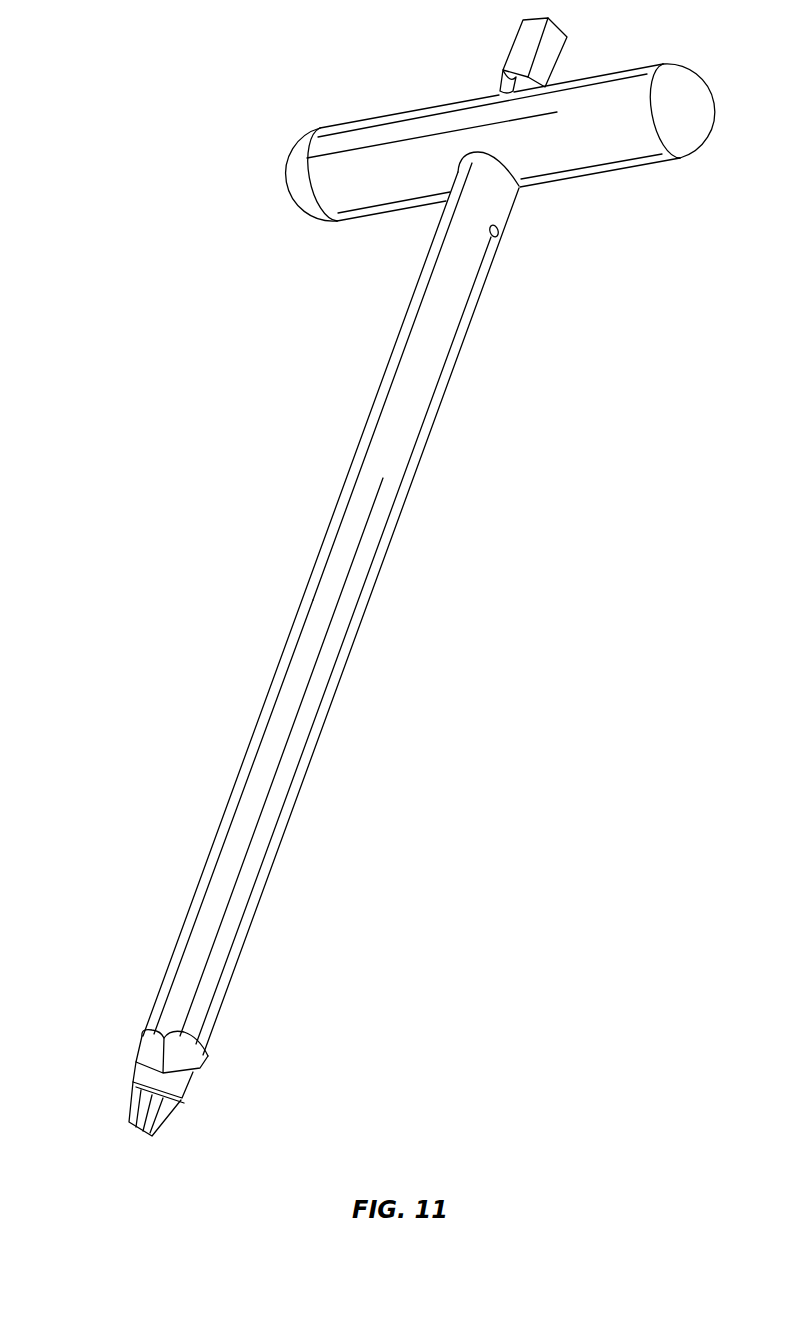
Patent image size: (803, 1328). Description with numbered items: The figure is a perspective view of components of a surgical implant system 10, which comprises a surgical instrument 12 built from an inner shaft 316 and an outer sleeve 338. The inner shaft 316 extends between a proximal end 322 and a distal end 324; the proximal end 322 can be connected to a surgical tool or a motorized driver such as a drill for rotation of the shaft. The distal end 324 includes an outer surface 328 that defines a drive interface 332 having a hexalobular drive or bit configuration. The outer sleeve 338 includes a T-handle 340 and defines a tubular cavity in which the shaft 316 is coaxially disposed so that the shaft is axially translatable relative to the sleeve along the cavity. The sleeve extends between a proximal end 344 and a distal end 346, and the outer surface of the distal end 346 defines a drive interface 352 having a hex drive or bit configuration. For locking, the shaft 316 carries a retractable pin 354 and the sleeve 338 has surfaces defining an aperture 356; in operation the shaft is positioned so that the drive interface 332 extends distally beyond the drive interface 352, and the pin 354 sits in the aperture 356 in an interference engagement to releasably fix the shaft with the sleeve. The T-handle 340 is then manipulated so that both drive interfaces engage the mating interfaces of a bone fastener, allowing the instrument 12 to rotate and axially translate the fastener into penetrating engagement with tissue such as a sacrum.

The surgical implant system 10 is at (641, 552).
The surgical instrument 12 is at (237, 499).
The inner shaft 316 is at (500, 84).
The proximal end 322 is at (562, 37).
The distal end 324 is at (153, 1095).
The outer surface 328 is at (173, 1117).
The drive interface 332 is at (145, 1125).
The outer sleeve 338 is at (340, 613).
The T-handle 340 is at (323, 148).
The proximal end 344 is at (415, 352).
The distal end 346 is at (200, 917).
The drive interface 352 is at (178, 1070).
The retractable pin 354 is at (498, 236).
The aperture 356 is at (490, 240).